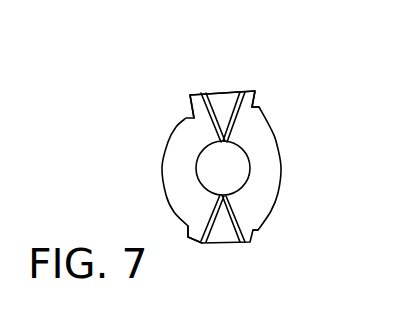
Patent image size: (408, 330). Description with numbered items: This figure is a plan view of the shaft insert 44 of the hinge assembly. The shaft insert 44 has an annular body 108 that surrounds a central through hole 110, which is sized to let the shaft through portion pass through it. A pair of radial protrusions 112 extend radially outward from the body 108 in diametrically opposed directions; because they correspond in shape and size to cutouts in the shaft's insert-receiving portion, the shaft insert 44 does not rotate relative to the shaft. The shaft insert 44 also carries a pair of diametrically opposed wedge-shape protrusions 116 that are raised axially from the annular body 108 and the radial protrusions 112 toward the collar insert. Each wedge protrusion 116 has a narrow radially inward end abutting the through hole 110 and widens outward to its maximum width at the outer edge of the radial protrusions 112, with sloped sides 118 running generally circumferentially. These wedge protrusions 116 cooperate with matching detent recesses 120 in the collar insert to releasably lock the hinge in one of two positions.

The shaft insert 44 is at (150, 104).
The annular body 108 is at (268, 177).
The through hole 110 is at (235, 163).
The radial protrusions 112 is at (262, 107).
The wedge-shape protrusions 116 is at (220, 97).
The sloped sides 118 is at (254, 94).
The detent recesses 120 is at (190, 229).